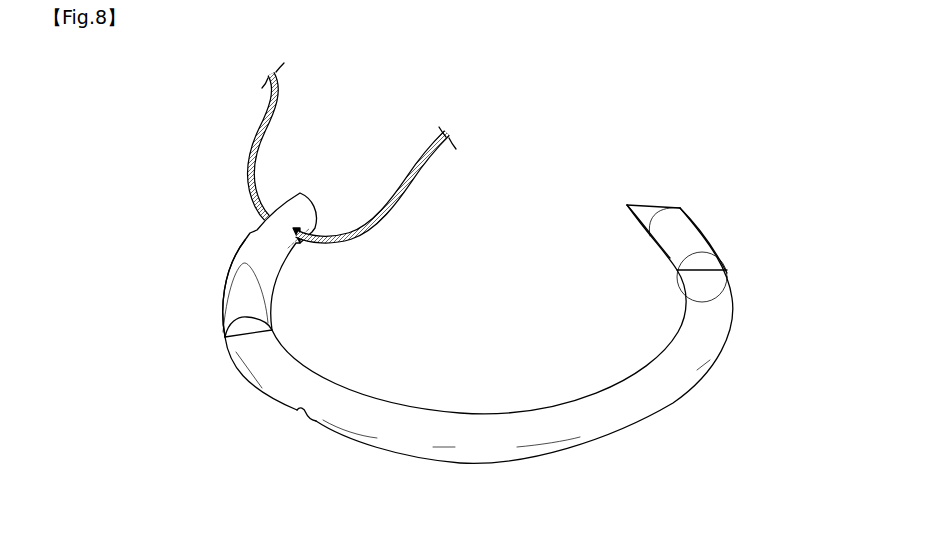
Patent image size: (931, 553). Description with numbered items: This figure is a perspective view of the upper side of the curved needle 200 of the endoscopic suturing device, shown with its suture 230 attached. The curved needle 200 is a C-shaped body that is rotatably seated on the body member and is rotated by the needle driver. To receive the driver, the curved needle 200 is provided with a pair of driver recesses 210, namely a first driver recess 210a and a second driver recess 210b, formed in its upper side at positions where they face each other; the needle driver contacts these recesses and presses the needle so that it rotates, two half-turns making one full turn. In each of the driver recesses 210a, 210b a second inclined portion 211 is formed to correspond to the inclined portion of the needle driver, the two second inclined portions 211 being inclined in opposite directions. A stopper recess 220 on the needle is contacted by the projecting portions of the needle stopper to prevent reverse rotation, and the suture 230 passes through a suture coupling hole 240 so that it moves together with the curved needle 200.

The curved needle 200 is at (493, 458).
The driver recess 210 is at (200, 330).
The first driver recess 210a is at (239, 265).
The second driver recess 210b is at (740, 275).
The second inclined portion 211 is at (247, 280).
The stopper recess 220 is at (296, 417).
The suture 230 is at (393, 217).
The suture coupling hole 240 is at (298, 243).